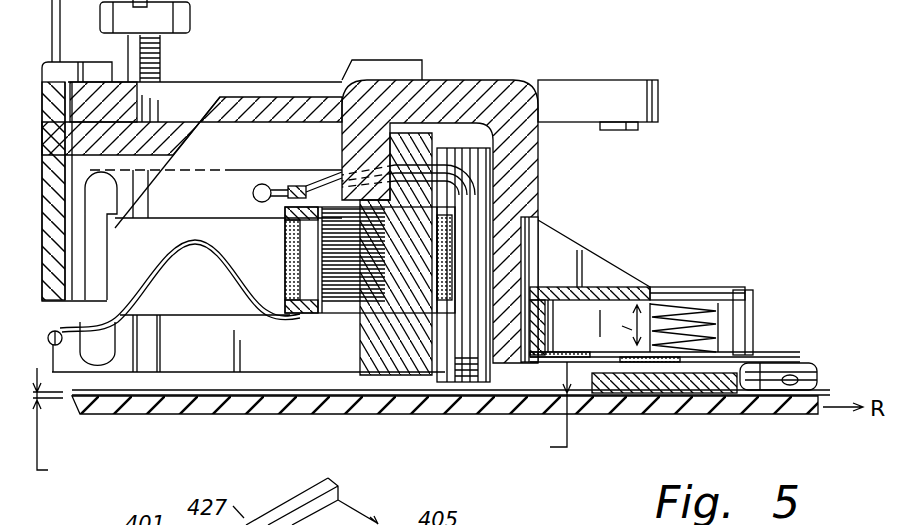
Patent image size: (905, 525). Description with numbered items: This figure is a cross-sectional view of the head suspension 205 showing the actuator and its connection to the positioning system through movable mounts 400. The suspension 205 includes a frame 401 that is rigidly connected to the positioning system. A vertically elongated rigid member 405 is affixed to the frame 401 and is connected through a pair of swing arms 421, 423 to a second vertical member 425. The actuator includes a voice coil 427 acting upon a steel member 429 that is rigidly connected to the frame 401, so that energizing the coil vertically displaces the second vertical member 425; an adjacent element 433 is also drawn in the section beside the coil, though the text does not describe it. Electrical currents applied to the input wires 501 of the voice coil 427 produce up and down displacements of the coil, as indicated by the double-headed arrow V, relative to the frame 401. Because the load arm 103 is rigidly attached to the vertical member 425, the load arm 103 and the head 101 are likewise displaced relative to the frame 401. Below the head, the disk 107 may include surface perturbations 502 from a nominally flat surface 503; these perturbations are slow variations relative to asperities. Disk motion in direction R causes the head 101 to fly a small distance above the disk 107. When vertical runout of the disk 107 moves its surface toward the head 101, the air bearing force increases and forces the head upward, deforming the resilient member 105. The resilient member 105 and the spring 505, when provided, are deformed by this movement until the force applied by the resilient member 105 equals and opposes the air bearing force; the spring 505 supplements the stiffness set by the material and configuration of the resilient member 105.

The head 101 is at (603, 398).
The load arm 103 is at (583, 250).
The resilient member 105 is at (720, 395).
The disk 107 is at (780, 405).
The suspension 205 is at (686, 98).
The movable mounts 400 is at (397, 514).
The frame 401 is at (228, 95).
The rigid member 405 is at (125, 413).
The swing arm 421 is at (268, 170).
The swing arm 423 is at (207, 360).
The second vertical member 425 is at (367, 365).
The voice coil 427 is at (288, 265).
The steel member 429 is at (448, 80).
The armature 433 is at (470, 382).
The input wires 501 is at (233, 275).
The surface perturbations 502 is at (302, 423).
The nominally flat surface 503 is at (57, 400).
The spring 505 is at (745, 290).